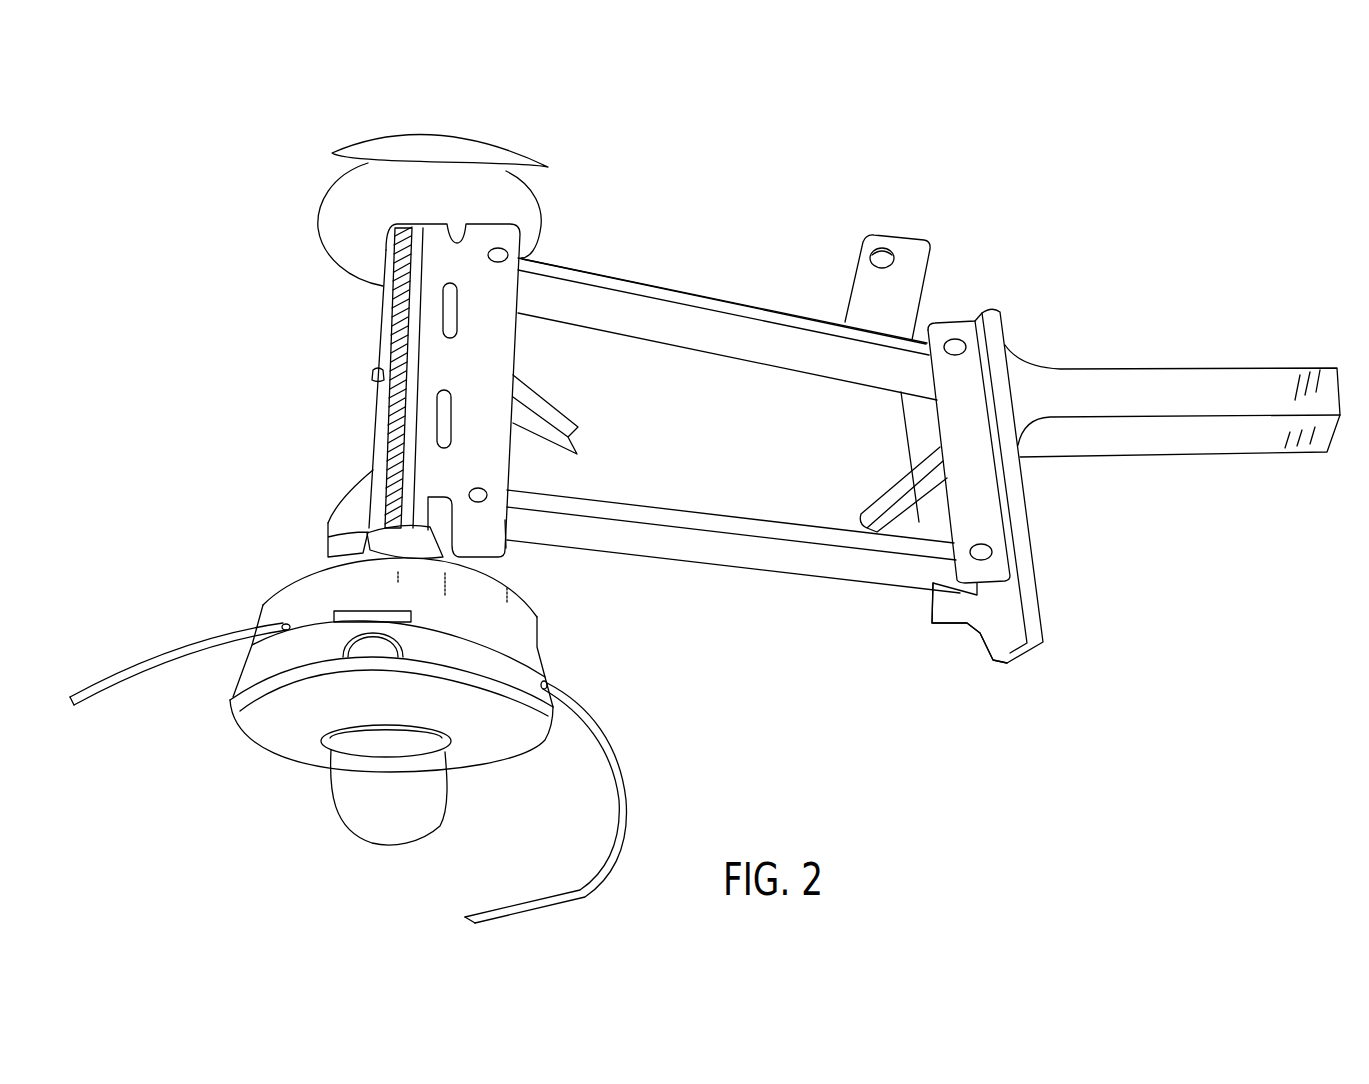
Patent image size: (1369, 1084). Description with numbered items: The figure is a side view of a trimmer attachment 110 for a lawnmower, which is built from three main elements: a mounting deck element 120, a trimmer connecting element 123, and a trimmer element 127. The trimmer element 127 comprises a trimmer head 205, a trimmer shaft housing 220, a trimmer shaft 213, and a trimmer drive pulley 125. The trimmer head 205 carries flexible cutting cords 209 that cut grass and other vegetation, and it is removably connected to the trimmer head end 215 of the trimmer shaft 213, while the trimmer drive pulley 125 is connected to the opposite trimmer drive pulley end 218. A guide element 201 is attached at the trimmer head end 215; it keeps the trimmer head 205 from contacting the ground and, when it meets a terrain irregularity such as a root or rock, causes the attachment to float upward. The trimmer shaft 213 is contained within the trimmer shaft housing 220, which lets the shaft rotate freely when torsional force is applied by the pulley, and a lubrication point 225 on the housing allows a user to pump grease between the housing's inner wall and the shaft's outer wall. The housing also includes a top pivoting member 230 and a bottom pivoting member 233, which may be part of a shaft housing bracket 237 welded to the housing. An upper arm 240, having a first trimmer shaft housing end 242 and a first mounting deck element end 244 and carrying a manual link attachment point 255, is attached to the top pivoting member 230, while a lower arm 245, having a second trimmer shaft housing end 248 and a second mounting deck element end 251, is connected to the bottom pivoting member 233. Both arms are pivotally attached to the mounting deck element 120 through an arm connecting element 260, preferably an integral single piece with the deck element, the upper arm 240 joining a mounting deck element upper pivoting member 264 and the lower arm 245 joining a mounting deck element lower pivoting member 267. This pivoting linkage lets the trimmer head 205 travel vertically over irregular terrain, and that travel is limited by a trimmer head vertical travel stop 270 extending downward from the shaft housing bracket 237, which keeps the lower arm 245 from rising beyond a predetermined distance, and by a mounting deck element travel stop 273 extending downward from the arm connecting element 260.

The trimmer attachment 110 is at (836, 718).
The mounting deck element 120 is at (1140, 380).
The trimmer connecting element 123 is at (729, 286).
The trimmer drive pulley 125 is at (421, 152).
The trimmer element 127 is at (455, 374).
The guide element 201 is at (433, 813).
The trimmer head 205 is at (263, 612).
The flexible cutting cords 209 is at (93, 700).
The trimmer shaft 213 is at (413, 293).
The trimmer head end 215 is at (327, 530).
The trimmer drive pulley end 218 is at (391, 237).
The trimmer shaft housing 220 is at (378, 433).
The lubrication point 225 is at (363, 380).
The top pivoting member 230 is at (494, 249).
The bottom pivoting member 233 is at (482, 492).
The shaft housing bracket 237 is at (503, 342).
The upper arm 240 is at (673, 290).
The first trimmer shaft housing end 242 is at (535, 280).
The first mounting deck element end 244 is at (908, 383).
The lower arm 245 is at (735, 563).
The second trimmer shaft housing end 248 is at (513, 525).
The second mounting deck element end 251 is at (937, 583).
The manual link attachment point 255 is at (920, 262).
The arm connecting element 260 is at (990, 478).
The mounting deck element upper pivoting member 264 is at (955, 340).
The mounting deck element lower pivoting member 267 is at (985, 552).
The trimmer head vertical travel stop 270 is at (572, 442).
The mounting deck element travel stop 273 is at (873, 508).